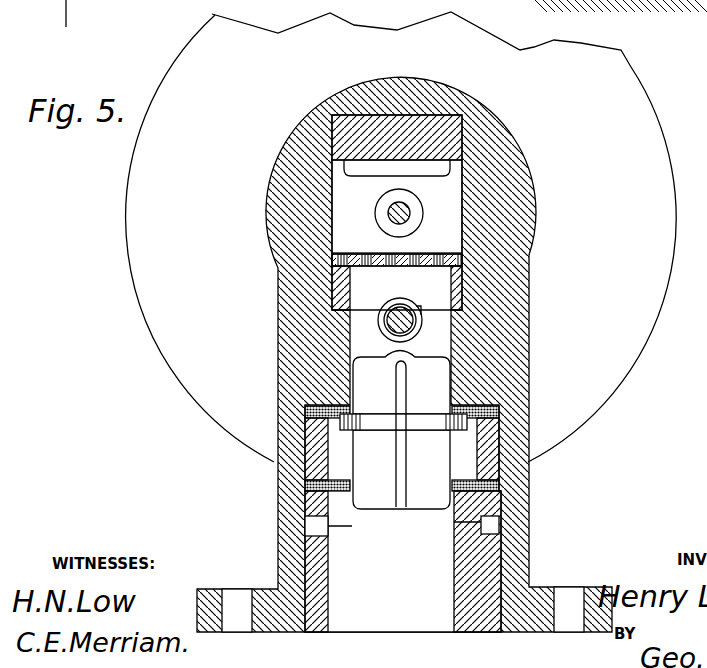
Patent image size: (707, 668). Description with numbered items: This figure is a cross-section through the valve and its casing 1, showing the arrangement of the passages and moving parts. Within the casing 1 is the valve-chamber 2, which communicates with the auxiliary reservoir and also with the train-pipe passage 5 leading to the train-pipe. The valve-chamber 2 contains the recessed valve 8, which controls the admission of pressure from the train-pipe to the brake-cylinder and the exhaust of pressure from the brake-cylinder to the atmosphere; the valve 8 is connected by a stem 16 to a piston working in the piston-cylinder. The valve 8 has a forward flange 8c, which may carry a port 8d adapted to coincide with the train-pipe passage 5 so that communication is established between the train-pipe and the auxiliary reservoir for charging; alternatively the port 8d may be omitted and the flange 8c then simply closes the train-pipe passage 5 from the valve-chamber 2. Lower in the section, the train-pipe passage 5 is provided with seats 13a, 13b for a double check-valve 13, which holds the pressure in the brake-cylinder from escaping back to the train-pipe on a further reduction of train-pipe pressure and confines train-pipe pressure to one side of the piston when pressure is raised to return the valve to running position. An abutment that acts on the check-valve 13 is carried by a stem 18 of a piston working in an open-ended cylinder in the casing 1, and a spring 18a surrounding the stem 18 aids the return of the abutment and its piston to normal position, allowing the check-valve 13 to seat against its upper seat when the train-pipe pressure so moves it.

The casing 1 is at (266, 208).
The valve-chamber 2 is at (397, 146).
The train-pipe passage 5 is at (397, 420).
The valve 8 is at (397, 206).
The forward flange 8c is at (452, 254).
The port 8d is at (366, 253).
The double check-valve 13 is at (414, 421).
The seat 13a is at (458, 478).
The seat 13b is at (366, 446).
The stem 16 is at (407, 212).
The stem 18 is at (387, 321).
The spring 18a is at (418, 322).